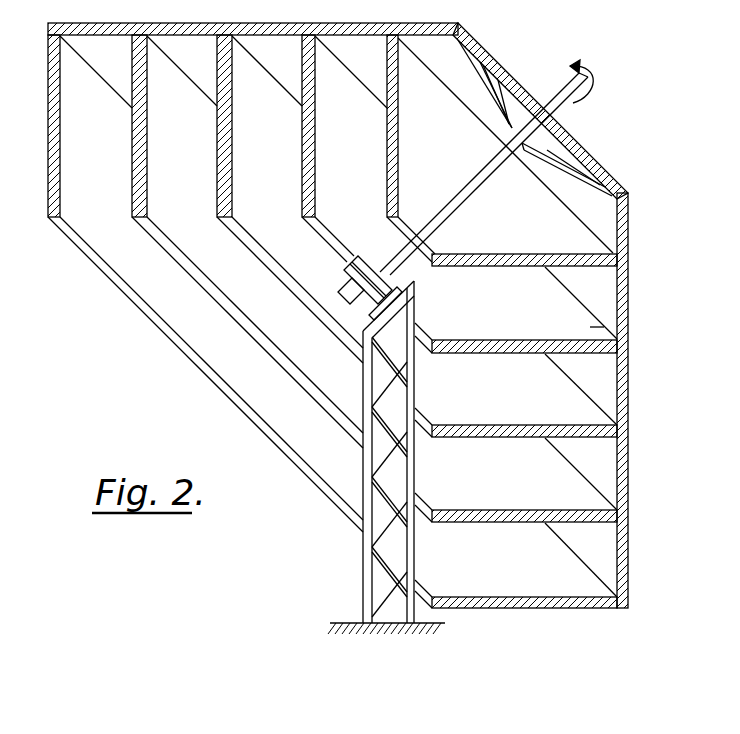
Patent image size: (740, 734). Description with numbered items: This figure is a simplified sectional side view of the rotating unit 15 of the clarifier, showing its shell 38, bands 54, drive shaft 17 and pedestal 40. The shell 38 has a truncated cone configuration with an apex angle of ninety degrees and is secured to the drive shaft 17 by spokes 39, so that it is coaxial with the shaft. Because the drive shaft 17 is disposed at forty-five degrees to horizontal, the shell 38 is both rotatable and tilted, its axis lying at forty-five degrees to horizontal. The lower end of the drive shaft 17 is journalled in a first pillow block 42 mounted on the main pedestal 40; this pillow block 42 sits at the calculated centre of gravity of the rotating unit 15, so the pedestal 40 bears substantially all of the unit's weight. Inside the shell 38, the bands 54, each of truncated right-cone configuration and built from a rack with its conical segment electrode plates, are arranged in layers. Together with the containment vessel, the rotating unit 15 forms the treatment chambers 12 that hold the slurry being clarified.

The treatment chamber 12 is at (555, 431).
The rotating unit 15 is at (364, 277).
The drive shaft 17 is at (486, 167).
The shell 38 is at (649, 400).
The spokes 39 is at (535, 131).
The main pedestal 40 is at (382, 457).
The first pillow block 42 is at (347, 286).
The band 54 is at (468, 465).